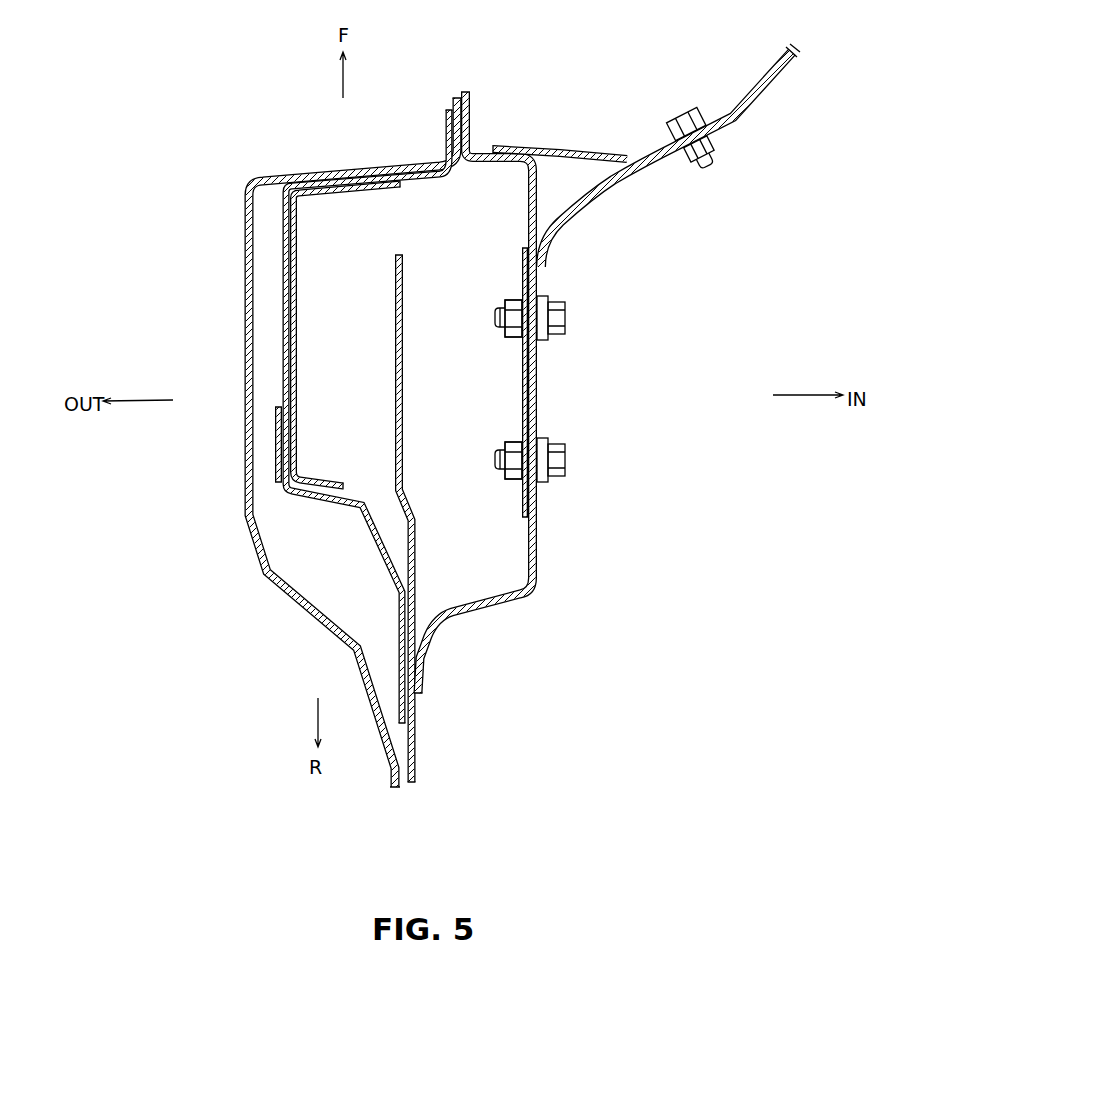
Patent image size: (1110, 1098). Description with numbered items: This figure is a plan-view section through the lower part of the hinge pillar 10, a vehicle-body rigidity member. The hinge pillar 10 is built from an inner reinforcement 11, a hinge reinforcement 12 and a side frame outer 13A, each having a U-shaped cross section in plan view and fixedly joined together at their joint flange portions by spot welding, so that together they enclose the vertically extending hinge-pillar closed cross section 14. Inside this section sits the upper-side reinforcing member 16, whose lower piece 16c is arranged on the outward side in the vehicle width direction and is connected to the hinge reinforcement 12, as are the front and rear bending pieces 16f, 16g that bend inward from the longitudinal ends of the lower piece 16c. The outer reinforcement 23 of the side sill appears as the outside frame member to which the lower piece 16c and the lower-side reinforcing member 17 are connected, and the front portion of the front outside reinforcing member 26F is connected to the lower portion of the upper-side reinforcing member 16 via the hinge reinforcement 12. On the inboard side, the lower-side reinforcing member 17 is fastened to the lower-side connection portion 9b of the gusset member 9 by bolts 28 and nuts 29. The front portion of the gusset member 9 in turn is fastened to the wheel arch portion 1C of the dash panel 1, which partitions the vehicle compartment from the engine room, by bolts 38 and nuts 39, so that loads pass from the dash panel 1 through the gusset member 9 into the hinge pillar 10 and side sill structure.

The dash panel 1 is at (757, 77).
The wheel arch portion 1C is at (570, 152).
The gusset member 9 is at (581, 235).
The lower-side connection portion 9b is at (547, 395).
The hinge pillar 10 is at (236, 303).
The inner reinforcement 11 is at (537, 555).
The hinge reinforcement 12 is at (282, 222).
The side frame outer 13A is at (245, 353).
The hinge-pillar closed cross section 14 is at (468, 391).
The upper-side reinforcing member 16 is at (306, 315).
The lower piece 16c is at (297, 354).
The bending piece 16f is at (355, 195).
The bending piece 16g is at (340, 483).
The lower-side reinforcing member 17 is at (520, 421).
The outer reinforcement 23 is at (393, 420).
The front outside reinforcing member 26F is at (265, 460).
The bolt 28 is at (565, 317).
The nut 29 is at (512, 298).
The bolt 38 is at (690, 118).
The nut 39 is at (712, 152).